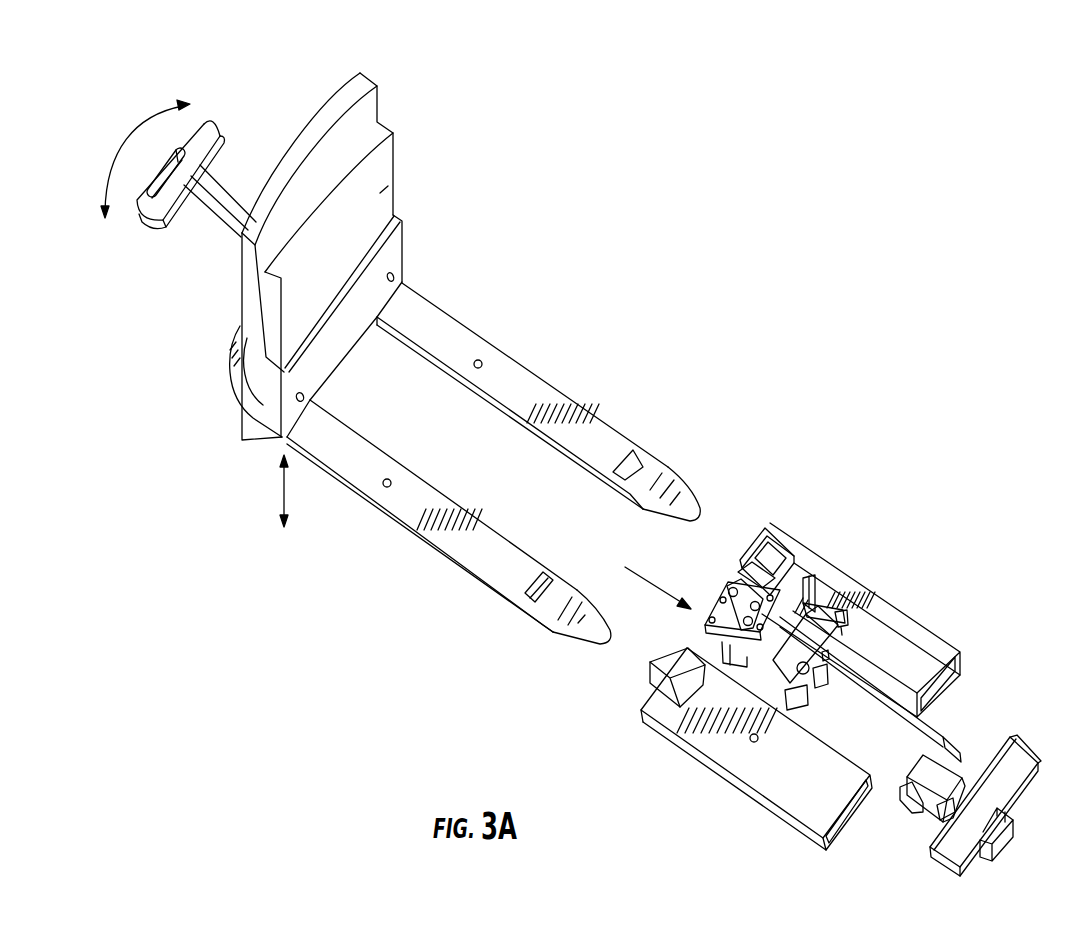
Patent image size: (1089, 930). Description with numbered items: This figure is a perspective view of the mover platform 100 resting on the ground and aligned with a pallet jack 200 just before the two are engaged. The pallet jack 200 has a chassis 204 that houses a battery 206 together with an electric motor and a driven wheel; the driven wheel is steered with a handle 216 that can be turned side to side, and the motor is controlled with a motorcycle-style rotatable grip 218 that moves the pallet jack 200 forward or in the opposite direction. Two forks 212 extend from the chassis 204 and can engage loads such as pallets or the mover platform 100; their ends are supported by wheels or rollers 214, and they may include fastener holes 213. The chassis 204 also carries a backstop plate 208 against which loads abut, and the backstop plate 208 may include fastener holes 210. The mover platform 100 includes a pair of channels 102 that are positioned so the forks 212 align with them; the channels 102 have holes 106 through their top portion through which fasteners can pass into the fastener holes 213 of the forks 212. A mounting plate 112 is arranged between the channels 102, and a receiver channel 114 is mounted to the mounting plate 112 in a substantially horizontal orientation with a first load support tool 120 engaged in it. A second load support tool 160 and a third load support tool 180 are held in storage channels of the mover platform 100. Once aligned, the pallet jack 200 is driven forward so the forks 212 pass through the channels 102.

The mover platform 100 is at (920, 553).
The channels 102 is at (797, 554).
The holes 106 is at (847, 616).
The mounting plate 112 is at (881, 742).
The receiver channel 114 is at (937, 777).
The first load support tool 120 is at (1031, 745).
The second load support tool 160 is at (832, 583).
The third load support tool 180 is at (703, 604).
The pallet jack 200 is at (439, 223).
The chassis 204 is at (250, 408).
The battery 206 is at (375, 195).
The backstop plate 208 is at (399, 249).
The fastener holes 210 is at (389, 282).
The forks 212 is at (455, 340).
The fastener holes 213 is at (481, 369).
The wheels or rollers 214 is at (545, 572).
The handle 216 is at (208, 196).
The rotatable grip 218 is at (218, 130).